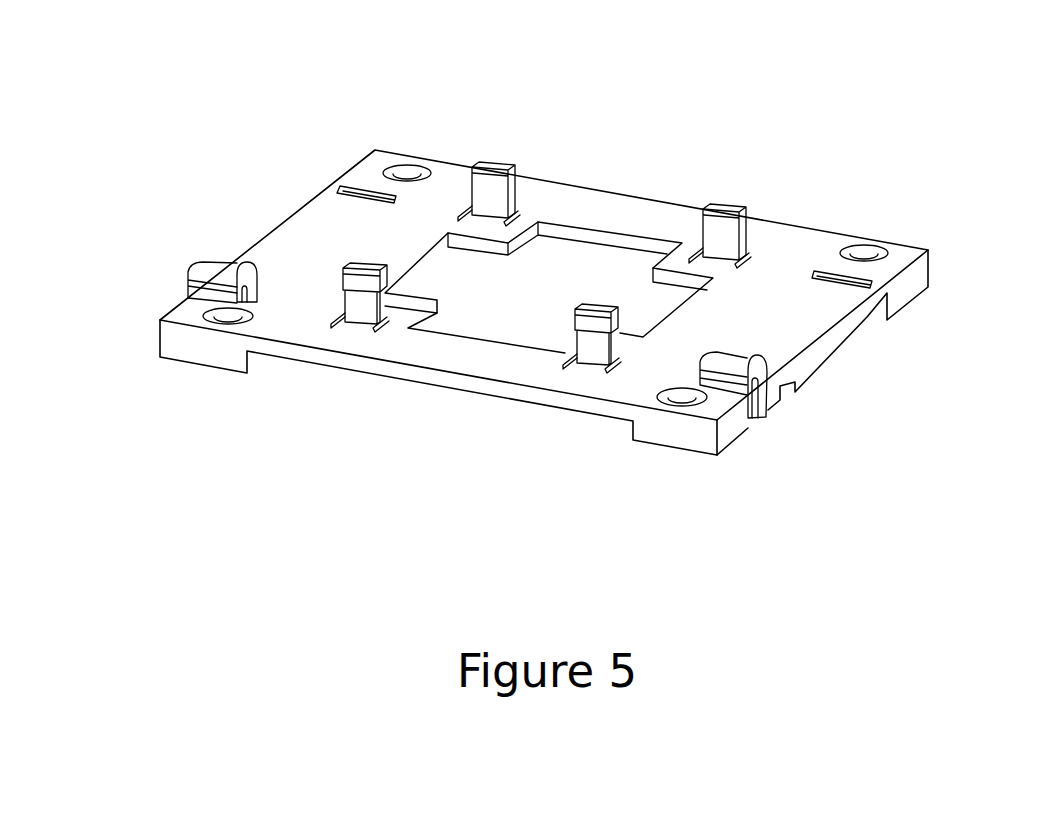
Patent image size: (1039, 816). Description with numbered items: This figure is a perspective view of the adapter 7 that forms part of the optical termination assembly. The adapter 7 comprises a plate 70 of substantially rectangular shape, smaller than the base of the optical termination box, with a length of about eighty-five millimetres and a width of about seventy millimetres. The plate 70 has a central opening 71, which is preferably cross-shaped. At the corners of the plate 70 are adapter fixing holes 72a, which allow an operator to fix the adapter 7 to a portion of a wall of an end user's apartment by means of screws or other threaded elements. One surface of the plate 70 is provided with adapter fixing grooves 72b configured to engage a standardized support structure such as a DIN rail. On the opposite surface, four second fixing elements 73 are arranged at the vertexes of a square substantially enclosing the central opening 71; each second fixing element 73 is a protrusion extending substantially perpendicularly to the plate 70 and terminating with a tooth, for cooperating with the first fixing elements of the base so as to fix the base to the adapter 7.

The adapter 7 is at (886, 193).
The plate 70 is at (582, 190).
The central opening 71 is at (590, 245).
The adapter fixing holes 72a is at (406, 171).
The adapter fixing grooves 72b is at (783, 393).
The second fixing elements 73 is at (485, 170).